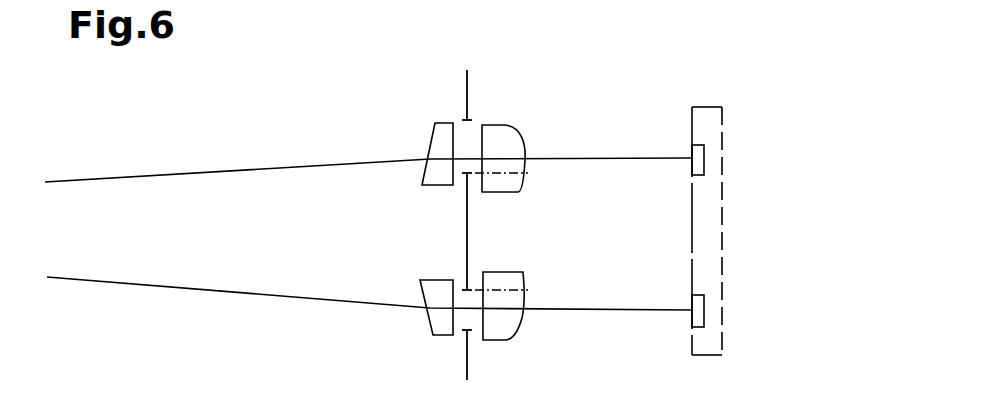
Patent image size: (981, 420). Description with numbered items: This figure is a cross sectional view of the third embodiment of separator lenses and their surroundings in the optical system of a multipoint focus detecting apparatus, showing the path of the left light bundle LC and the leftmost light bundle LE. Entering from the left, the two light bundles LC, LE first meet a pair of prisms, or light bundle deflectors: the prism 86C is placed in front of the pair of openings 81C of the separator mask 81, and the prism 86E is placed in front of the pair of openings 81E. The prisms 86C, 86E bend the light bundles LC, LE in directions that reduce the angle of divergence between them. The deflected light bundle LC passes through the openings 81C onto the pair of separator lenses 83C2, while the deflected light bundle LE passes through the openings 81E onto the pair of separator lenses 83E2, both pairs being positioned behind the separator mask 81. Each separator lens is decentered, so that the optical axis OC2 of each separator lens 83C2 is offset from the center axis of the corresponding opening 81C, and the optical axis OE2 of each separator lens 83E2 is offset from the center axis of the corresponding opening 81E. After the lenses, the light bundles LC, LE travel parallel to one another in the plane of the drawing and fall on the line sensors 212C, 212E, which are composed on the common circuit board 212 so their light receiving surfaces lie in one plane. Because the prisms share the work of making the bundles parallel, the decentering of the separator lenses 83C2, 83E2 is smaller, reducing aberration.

The left light bundle LC is at (155, 175).
The leftmost light bundle LE is at (157, 287).
The separator mask 81 is at (470, 85).
The opening of the separator mask 81C is at (472, 133).
The opening of the separator mask 81E is at (470, 322).
The prism (light bundle deflector) 86C is at (440, 143).
The prism (light bundle deflector) 86E is at (440, 320).
The separator lens 83C2 is at (510, 143).
The separator lens 83E2 is at (500, 320).
The optical axis of separator lens 83C2 OC2 is at (528, 173).
The optical axis of separator lens 83E2 OE2 is at (528, 290).
The common circuit board 212 is at (718, 140).
The line sensor 212C is at (705, 157).
The line sensor 212E is at (697, 312).